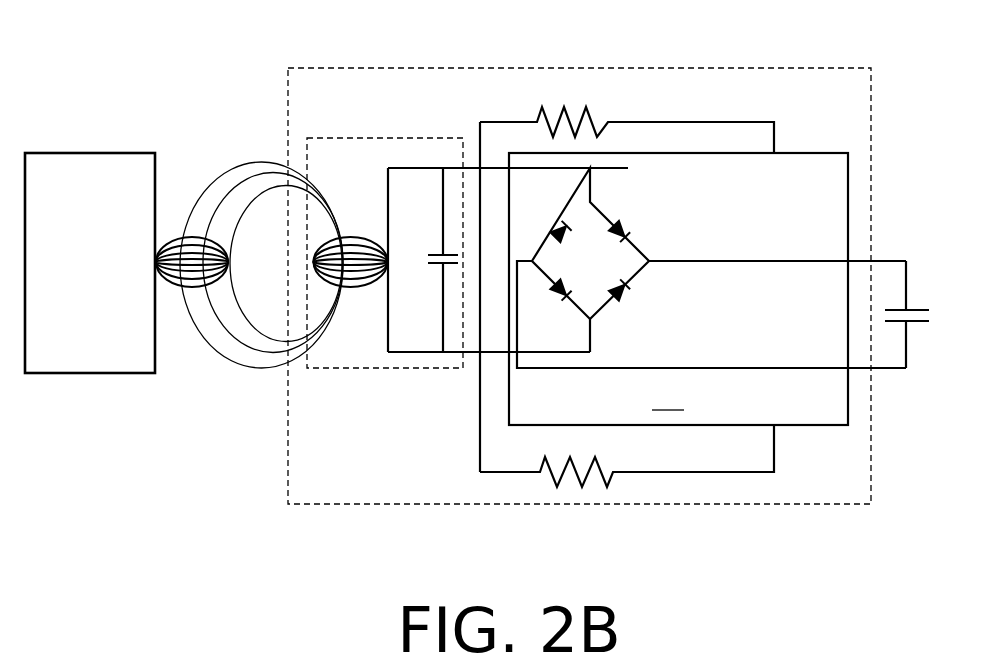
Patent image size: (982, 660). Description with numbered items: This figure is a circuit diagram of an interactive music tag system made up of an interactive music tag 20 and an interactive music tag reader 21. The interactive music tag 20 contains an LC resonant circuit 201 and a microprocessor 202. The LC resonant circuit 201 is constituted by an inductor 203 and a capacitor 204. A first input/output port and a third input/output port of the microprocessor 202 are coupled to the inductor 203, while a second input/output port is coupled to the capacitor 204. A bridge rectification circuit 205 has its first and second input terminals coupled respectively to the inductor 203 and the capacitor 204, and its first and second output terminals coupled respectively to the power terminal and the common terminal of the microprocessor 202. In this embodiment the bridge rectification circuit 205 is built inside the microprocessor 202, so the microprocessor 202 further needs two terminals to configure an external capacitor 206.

The interactive music tag 20 is at (543, 67).
The interactive music tag reader 21 is at (97, 152).
The LC resonant circuit 201 is at (367, 138).
The microprocessor 202 is at (811, 153).
The inductor 203 is at (352, 234).
The capacitor 204 is at (423, 260).
The bridge rectification circuit 205 is at (558, 228).
The external capacitor 206 is at (922, 325).